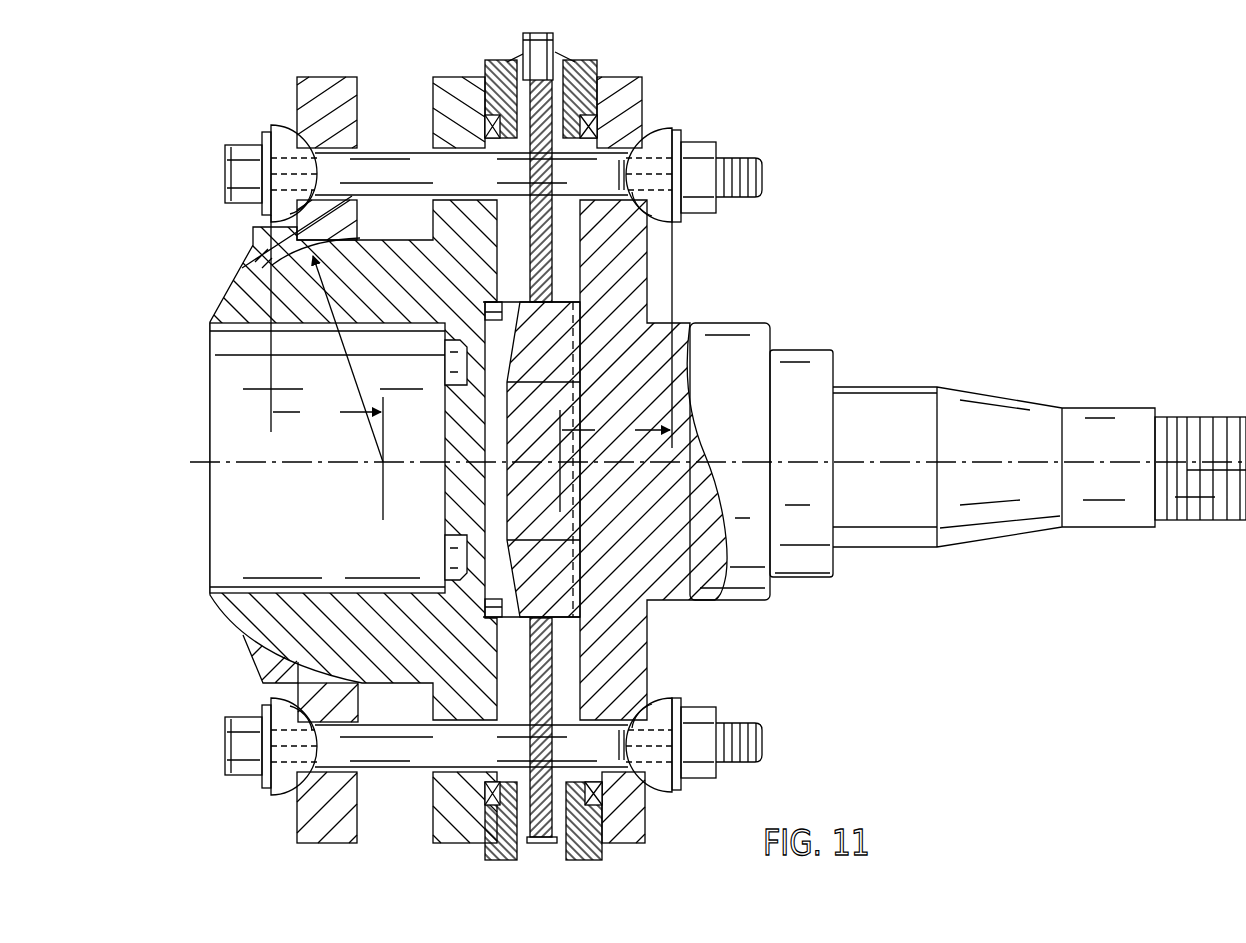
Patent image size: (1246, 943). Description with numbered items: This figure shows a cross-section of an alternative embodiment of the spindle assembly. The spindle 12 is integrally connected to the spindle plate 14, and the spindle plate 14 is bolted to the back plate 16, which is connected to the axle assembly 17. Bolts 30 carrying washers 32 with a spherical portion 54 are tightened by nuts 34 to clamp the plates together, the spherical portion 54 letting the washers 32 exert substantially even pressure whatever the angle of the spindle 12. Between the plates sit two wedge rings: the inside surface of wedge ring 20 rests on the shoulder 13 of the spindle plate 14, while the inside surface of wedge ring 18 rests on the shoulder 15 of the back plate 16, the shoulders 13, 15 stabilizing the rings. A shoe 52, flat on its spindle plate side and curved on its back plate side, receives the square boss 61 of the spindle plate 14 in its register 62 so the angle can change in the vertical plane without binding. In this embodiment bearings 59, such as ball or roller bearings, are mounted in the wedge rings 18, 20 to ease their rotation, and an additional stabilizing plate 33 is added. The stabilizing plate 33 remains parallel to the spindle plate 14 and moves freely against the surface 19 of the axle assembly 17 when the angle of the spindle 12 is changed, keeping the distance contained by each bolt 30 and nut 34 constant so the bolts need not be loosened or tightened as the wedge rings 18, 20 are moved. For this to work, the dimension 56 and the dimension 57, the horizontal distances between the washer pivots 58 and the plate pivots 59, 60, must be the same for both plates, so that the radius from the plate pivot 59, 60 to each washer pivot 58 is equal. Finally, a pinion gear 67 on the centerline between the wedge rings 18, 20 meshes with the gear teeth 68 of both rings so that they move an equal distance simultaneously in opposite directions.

The spindle 12 is at (920, 400).
The shoulder 13 is at (590, 147).
The spindle plate 14 is at (637, 92).
The shoulder 15 is at (490, 147).
The back plate 16 is at (447, 118).
The axle assembly 17 is at (238, 617).
The wedge ring 18 is at (485, 849).
The surface 19 is at (262, 268).
The wedge ring 20 is at (604, 853).
The bolt 30 is at (767, 738).
The washer 32 is at (286, 795).
The stabilizing plate 33 is at (339, 75).
The nut 34 is at (710, 147).
The shoe 52 is at (498, 566).
The spherical portion 54 is at (278, 783).
The dimension 56 is at (327, 367).
The dimension 57 is at (616, 367).
The washer pivot 58 is at (262, 145).
The bearing 59 is at (512, 64).
The plate pivot 60 is at (383, 462).
The square boss 61 is at (520, 419).
The register 62 is at (538, 538).
The pinion gear 67 is at (560, 52).
The gear teeth 68 is at (566, 853).